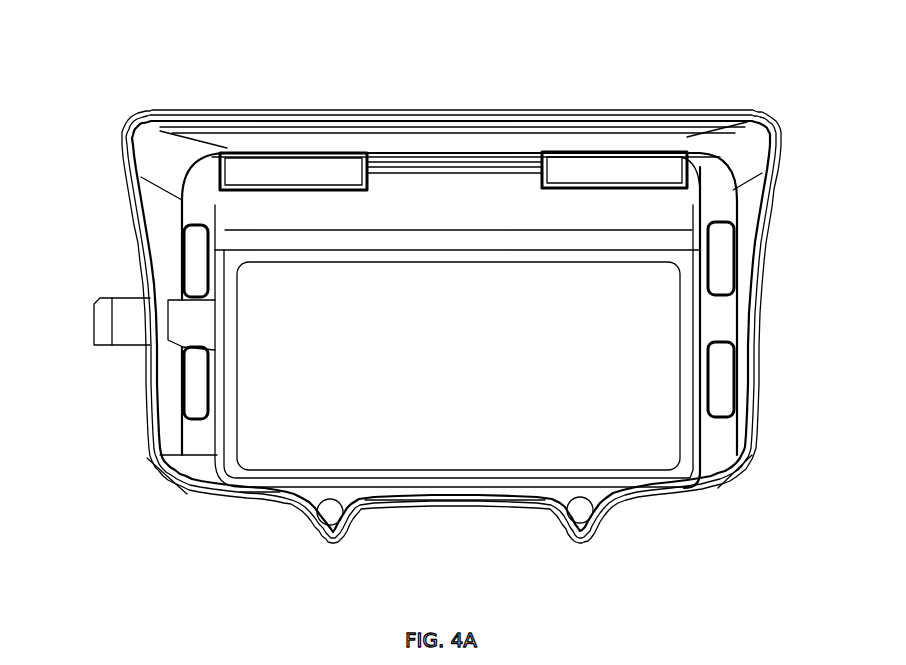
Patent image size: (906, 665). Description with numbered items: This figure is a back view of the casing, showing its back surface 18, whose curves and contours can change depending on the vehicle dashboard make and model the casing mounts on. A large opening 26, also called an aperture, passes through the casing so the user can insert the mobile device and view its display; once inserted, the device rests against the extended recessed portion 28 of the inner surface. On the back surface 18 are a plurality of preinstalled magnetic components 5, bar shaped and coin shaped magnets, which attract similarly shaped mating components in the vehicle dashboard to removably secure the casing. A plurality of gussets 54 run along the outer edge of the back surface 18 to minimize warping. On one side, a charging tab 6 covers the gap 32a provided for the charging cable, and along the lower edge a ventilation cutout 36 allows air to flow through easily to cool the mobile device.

The back surface 18 is at (213, 477).
The extended recessed portion 28 is at (495, 213).
The magnetic component 5 is at (277, 172).
The gussets 54 is at (435, 157).
The opening 26 is at (565, 315).
The gap 32a is at (173, 317).
The charging tab 6 is at (130, 320).
The ventilation cutout 36 is at (467, 510).